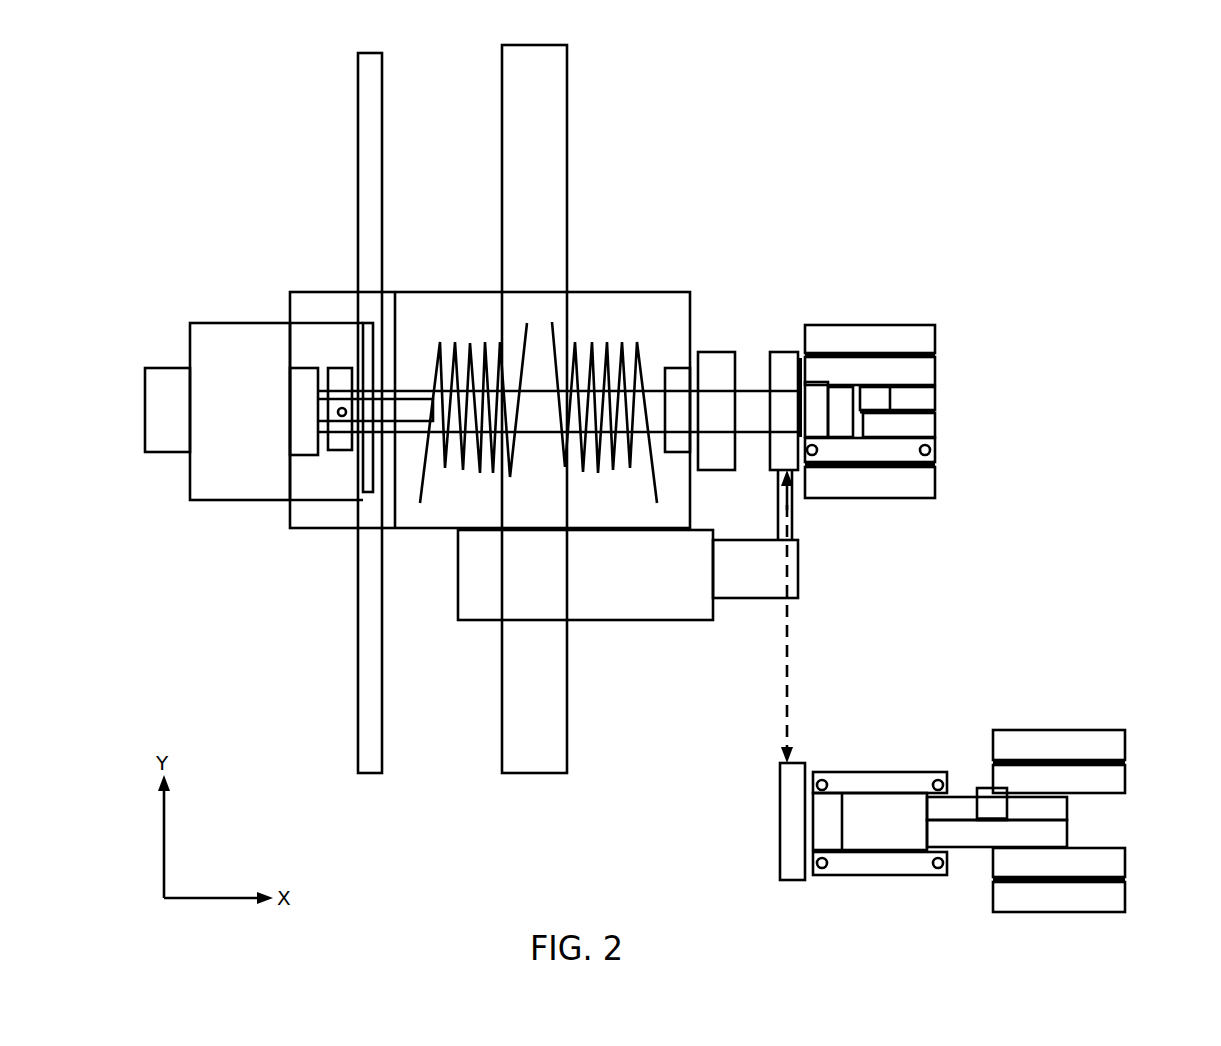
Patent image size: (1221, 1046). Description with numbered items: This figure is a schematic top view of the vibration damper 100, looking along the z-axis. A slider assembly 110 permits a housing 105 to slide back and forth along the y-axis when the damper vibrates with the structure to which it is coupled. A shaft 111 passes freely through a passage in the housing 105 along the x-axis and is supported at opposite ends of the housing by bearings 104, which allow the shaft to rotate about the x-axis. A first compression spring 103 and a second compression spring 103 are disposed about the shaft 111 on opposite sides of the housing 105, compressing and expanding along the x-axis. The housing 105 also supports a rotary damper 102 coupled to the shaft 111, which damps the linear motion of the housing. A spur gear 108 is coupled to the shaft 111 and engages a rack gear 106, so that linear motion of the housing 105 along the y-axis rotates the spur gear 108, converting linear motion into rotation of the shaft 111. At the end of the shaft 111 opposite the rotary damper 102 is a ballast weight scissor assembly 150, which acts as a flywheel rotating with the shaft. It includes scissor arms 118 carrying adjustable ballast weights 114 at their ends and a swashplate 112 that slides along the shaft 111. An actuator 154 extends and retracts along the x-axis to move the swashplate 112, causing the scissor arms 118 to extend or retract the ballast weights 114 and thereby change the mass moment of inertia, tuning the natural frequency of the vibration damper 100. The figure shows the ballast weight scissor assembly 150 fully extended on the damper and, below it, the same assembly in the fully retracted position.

The vibration damper 100 is at (178, 176).
The rotary damper 102 is at (239, 441).
The compression spring 103 is at (545, 341).
The bearing 104 is at (483, 326).
The housing 105 is at (471, 331).
The rack gear 106 is at (313, 413).
The spur gear 108 is at (295, 455).
The slider assembly 110 is at (456, 441).
The shaft 111 is at (572, 519).
The swashplate 112 is at (843, 581).
The adjustable ballast weight 114 is at (971, 617).
The scissor arm 118 is at (993, 678).
The ballast weight scissor assembly 150 is at (996, 554).
The actuator 154 is at (628, 602).